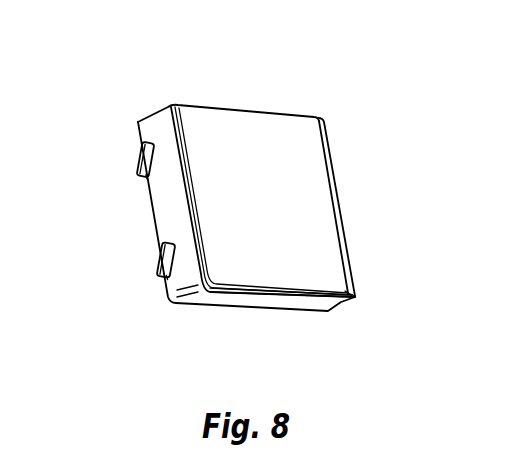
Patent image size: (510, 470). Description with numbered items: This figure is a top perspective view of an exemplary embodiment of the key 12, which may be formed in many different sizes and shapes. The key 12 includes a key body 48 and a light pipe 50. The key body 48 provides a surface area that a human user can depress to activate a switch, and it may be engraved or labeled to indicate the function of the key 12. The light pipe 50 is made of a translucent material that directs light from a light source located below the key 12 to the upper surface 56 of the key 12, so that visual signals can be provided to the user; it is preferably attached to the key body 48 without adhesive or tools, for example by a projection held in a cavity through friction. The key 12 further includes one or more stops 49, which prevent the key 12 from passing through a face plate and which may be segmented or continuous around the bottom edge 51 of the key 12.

The key 12 is at (256, 110).
The key body 48 is at (257, 270).
The light pipe 50 is at (343, 193).
The upper surface 56 is at (347, 240).
The bottom edge 51 is at (153, 212).
The stop 49 is at (158, 265).